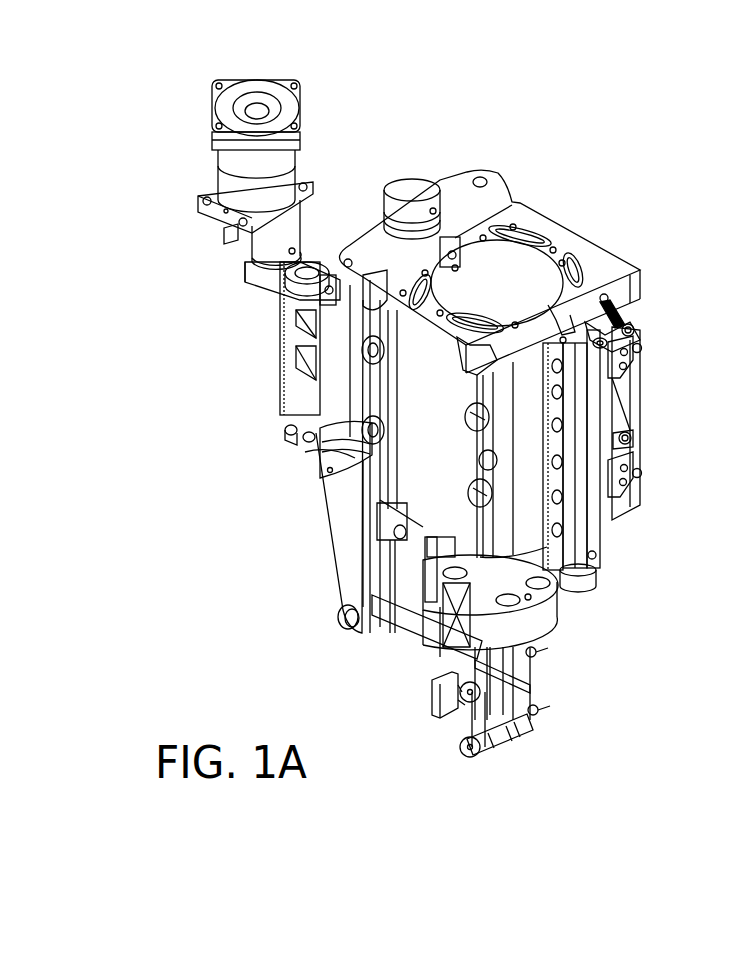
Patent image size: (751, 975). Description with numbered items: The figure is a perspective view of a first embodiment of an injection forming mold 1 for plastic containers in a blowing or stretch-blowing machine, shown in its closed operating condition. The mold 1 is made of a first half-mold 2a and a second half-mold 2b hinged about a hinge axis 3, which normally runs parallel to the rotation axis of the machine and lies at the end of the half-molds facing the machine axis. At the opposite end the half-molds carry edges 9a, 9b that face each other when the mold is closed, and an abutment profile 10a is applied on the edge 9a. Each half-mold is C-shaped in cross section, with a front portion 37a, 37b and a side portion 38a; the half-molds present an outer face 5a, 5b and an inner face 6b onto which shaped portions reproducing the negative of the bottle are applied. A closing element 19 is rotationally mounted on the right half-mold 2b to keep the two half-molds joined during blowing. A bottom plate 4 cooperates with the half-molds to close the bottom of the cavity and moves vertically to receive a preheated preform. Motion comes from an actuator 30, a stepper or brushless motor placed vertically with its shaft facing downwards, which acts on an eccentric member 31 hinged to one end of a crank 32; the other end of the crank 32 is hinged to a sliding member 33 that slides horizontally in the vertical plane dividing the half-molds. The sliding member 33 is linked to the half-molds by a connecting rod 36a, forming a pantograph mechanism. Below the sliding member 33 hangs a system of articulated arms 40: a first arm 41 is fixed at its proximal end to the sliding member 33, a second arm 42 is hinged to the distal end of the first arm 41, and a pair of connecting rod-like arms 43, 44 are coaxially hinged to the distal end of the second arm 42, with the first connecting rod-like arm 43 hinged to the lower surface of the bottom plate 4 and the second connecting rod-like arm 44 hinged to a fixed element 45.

The injection forming mold 1 is at (598, 107).
The first half-mold 2a is at (437, 483).
The second half-mold 2b is at (640, 392).
The hinge axis 3 is at (414, 188).
The bottom plate 4 is at (547, 617).
The outer face 5a is at (308, 437).
The outer face 5b is at (647, 298).
The inner face 6b is at (524, 297).
The edge 9a is at (551, 325).
The edge 9b is at (612, 340).
The abutment profile 10a is at (553, 380).
The closing element 19 is at (613, 505).
The actuator 30 is at (228, 183).
The eccentric member 31 is at (270, 243).
The crank 32 is at (270, 281).
The sliding member 33 is at (297, 383).
The connecting rod 36a is at (323, 467).
The front portion 37a is at (528, 530).
The front portion 37b is at (625, 292).
The side portion 38a is at (461, 397).
The system of articulated arms 40 is at (343, 632).
The first arm 41 is at (340, 567).
The second arm 42 is at (412, 643).
The first connecting rod-like arm 43 is at (493, 680).
The second connecting rod-like arm 44 is at (530, 702).
The fixed element 45 is at (445, 700).